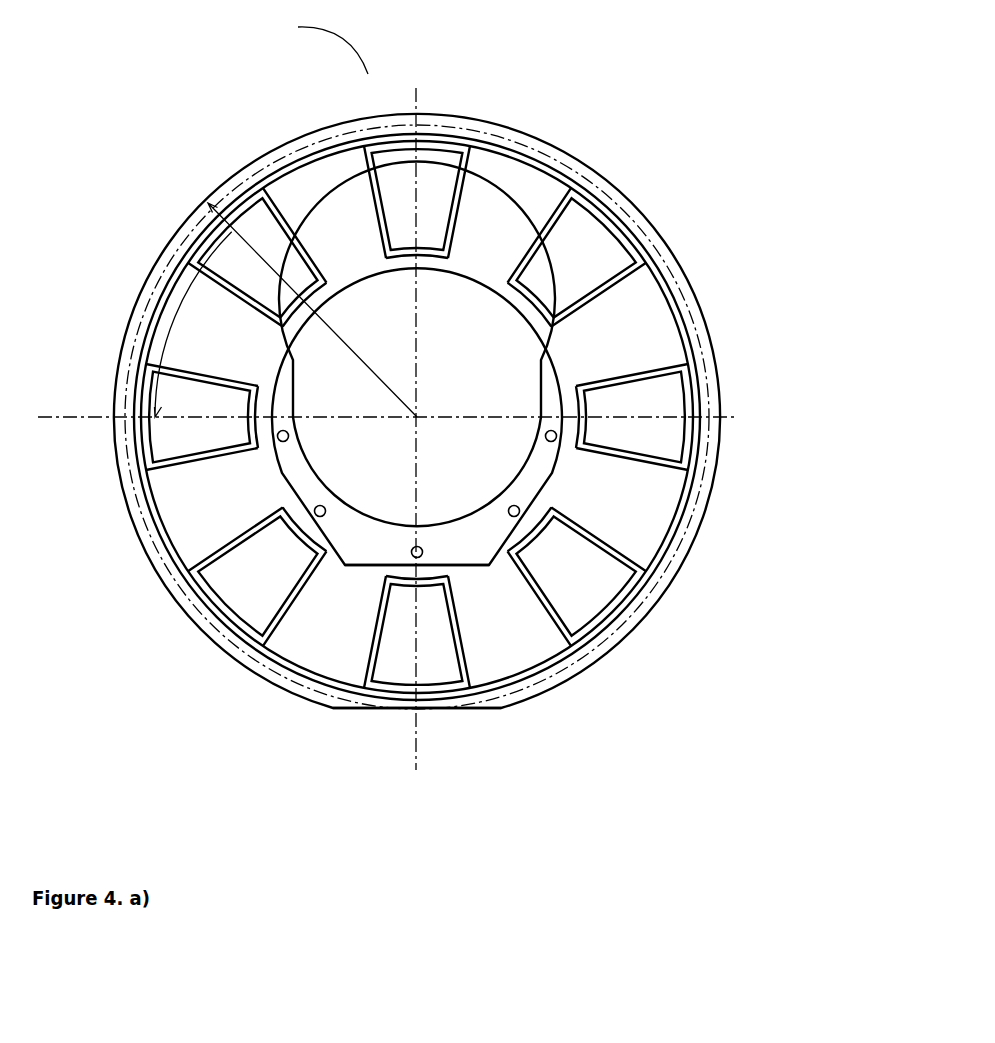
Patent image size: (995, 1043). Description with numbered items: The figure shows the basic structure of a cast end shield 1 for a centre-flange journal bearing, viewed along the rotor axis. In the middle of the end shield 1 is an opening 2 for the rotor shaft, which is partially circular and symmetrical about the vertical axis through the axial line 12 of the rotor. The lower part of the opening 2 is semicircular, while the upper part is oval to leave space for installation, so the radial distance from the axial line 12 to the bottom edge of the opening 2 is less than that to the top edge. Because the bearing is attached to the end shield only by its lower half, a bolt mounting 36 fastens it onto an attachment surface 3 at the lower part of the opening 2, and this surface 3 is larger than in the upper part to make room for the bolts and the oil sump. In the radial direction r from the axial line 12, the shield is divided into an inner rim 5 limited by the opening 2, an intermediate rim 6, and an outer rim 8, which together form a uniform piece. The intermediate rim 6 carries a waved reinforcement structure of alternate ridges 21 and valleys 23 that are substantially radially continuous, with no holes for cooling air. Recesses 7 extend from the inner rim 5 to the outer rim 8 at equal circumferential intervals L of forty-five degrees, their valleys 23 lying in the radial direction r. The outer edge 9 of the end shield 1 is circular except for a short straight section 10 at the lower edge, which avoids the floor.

The end shield 1 is at (371, 65).
The opening 2 is at (447, 316).
The attachment surface 3 is at (461, 552).
The inner rim 5 is at (458, 267).
The intermediate rim 6 is at (612, 338).
The recesses 7 is at (580, 242).
The outer rim 8 is at (713, 374).
The outer edge 9 is at (720, 438).
The straight section 10 is at (453, 708).
The axial line 12 is at (417, 417).
The ridges 21 is at (388, 202).
The valleys 23 is at (302, 300).
The bolt mounting 36 is at (297, 440).
The circumferential interval L is at (170, 323).
The radial direction r is at (312, 310).